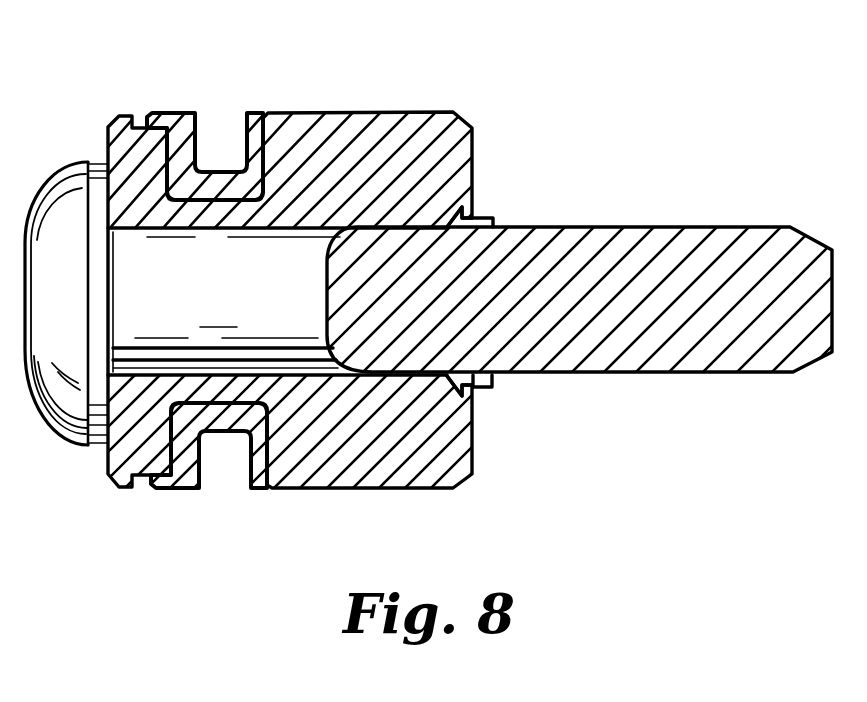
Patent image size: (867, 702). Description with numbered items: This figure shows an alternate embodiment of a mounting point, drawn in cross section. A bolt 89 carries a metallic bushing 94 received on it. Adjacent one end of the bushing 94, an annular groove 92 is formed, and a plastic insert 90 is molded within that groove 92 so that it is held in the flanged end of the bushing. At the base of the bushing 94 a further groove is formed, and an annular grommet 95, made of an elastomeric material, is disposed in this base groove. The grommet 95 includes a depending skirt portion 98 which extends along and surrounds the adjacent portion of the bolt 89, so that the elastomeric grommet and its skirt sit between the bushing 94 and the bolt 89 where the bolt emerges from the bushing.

The bolt 89 is at (643, 322).
The plastic insert 90 is at (225, 28).
The annular groove 92 is at (190, 490).
The metallic bushing 94 is at (465, 20).
The annular grommet 95 is at (582, 80).
The depending skirt portion 98 is at (643, 150).